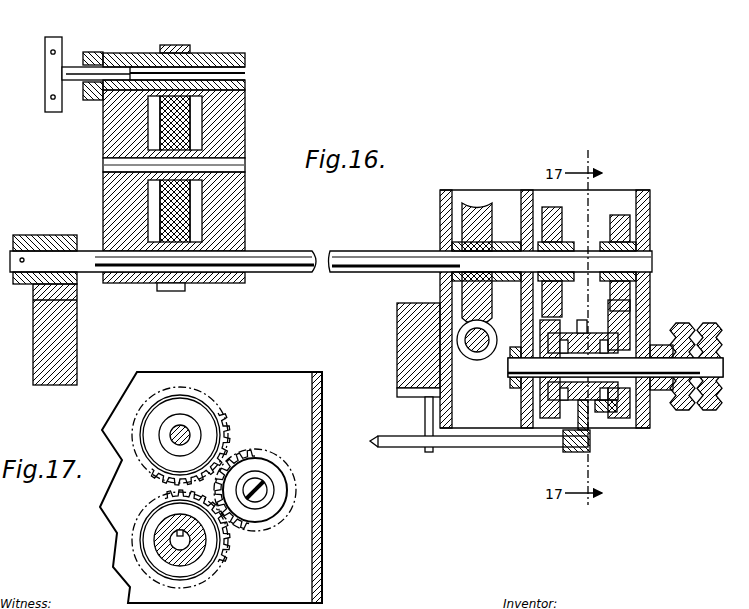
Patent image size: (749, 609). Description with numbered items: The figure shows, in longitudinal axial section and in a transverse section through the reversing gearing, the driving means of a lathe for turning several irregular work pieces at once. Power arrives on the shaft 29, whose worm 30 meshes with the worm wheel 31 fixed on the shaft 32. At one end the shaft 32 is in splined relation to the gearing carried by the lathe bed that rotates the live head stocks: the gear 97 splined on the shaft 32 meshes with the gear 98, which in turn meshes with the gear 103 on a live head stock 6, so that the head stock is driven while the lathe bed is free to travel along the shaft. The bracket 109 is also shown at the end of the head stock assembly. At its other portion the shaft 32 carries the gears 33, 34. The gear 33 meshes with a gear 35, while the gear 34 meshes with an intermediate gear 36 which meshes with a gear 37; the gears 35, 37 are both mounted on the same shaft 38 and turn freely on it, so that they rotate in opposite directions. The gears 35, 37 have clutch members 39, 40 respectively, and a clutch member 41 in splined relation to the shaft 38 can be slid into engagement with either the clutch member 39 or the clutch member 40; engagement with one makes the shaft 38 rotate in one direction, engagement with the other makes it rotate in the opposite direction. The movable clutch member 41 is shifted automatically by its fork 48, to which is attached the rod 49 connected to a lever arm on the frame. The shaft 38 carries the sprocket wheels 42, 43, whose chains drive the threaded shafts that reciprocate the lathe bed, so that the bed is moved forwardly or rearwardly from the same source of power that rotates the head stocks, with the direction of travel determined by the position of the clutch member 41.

In FIG. 16, the live head stock 6 is at (75, 62).
In FIG. 16, the gear 103 is at (190, 48).
In FIG. 16, the bracket 109 is at (50, 80).
In FIG. 16, the gear 98 is at (245, 212).
In FIG. 16, the gear 97 is at (178, 292).
In FIG. 16, the shaft 32 is at (432, 266).
In FIG. 16, the worm wheel 31 is at (497, 300).
In FIG. 16, the gear 33 is at (556, 253).
In FIG. 16, the gear 34 is at (618, 254).
In FIG. 17, the gear 34 is at (202, 415).
In FIG. 17, the intermediate gear 36 is at (262, 462).
In FIG. 16, the gear 37 is at (614, 420).
In FIG. 17, the gear 37 is at (210, 570).
In FIG. 16, the shaft 38 is at (510, 378).
In FIG. 17, the shaft 38 is at (162, 558).
In FIG. 16, the clutch member 41 is at (582, 334).
In FIG. 17, the clutch member 41 is at (187, 566).
In FIG. 16, the shaft 29 is at (473, 356).
In FIG. 16, the worm 30 is at (483, 352).
In FIG. 16, the rod 49 is at (408, 447).
In FIG. 16, the gear 35 is at (548, 422).
In FIG. 16, the clutch member 39 is at (572, 405).
In FIG. 16, the clutch member 40 is at (604, 414).
In FIG. 16, the fork 48 is at (590, 452).
In FIG. 16, the sprocket wheel 42 is at (682, 410).
In FIG. 16, the sprocket wheel 43 is at (711, 410).